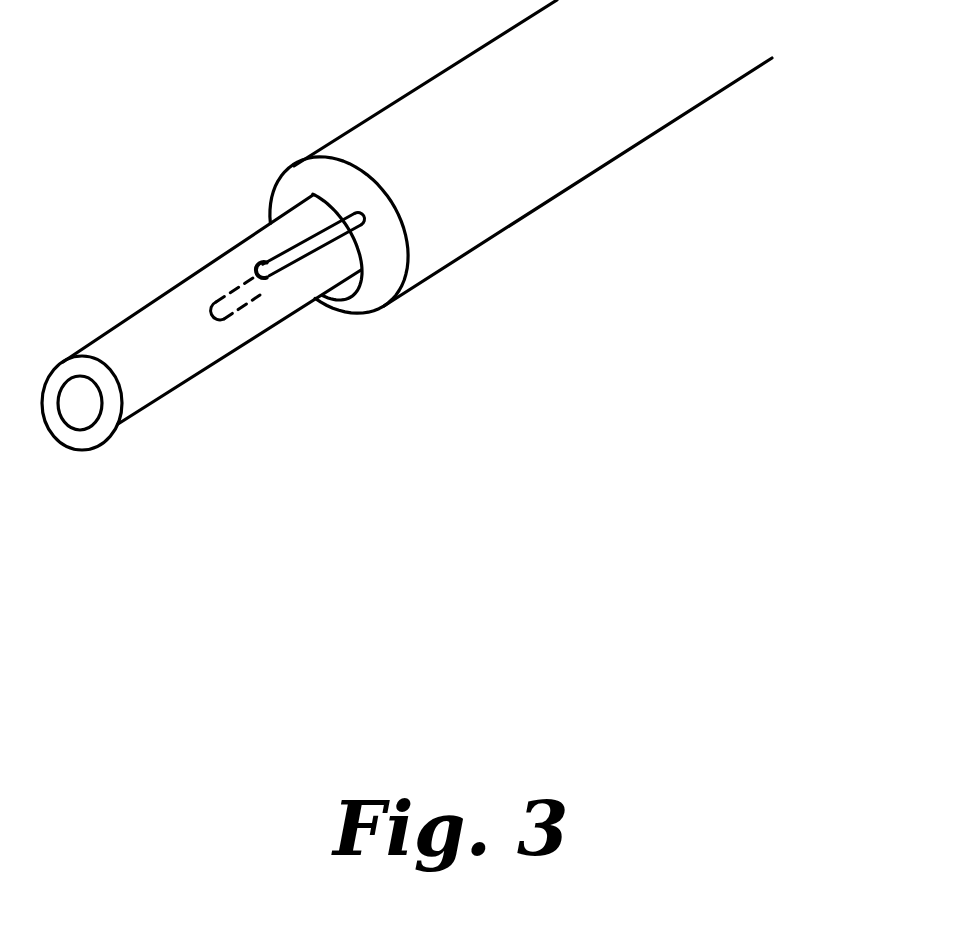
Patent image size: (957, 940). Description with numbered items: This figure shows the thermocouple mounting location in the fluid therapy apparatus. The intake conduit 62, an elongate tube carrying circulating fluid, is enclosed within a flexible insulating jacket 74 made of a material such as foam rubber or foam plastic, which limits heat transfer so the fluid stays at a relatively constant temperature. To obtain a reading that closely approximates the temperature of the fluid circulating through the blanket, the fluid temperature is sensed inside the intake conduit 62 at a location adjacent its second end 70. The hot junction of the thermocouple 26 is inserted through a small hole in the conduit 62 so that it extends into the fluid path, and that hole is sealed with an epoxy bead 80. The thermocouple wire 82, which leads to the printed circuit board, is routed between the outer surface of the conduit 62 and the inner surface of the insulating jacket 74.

The thermocouple 26 is at (226, 319).
The intake conduit 62 is at (130, 313).
The second end 70 is at (176, 500).
The insulating jacket 74 is at (492, 222).
The epoxy bead 80 is at (275, 278).
The thermocouple wire 82 is at (258, 260).